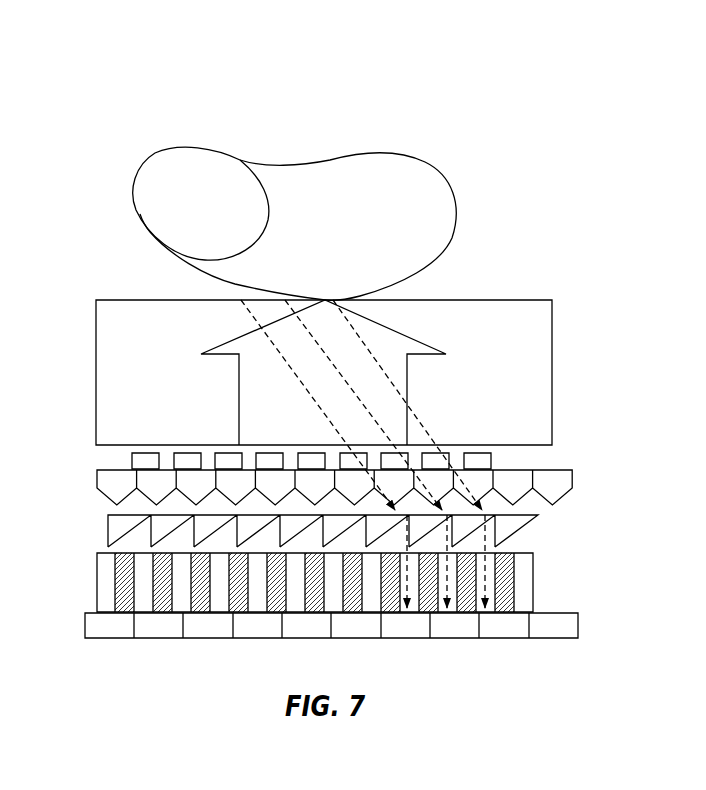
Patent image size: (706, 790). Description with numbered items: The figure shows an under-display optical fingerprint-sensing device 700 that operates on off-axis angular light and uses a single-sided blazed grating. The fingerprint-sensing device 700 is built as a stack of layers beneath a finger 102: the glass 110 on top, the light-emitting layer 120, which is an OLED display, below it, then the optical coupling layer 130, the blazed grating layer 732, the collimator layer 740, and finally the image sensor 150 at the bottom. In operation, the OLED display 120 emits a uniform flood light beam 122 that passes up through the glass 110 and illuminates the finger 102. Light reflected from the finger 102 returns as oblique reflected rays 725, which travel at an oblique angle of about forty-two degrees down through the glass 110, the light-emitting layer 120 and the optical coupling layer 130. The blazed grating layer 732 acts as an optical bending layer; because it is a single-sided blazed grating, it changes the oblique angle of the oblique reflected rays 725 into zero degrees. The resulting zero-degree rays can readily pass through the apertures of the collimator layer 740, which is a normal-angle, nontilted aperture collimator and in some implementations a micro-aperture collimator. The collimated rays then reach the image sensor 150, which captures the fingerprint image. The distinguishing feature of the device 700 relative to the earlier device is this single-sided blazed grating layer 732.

The under-display optical fingerprint-sensing device 700 is at (101, 121).
The finger 102 is at (339, 233).
The glass 110 is at (96, 372).
The uniform flood light beam 122 is at (239, 396).
The oblique reflected rays 725 is at (316, 401).
The light-emitting layer 120 is at (129, 462).
The optical coupling layer 130 is at (576, 484).
The blazed grating layer 732 is at (535, 527).
The collimator layer 740 is at (94, 580).
The image sensor 150 is at (580, 628).